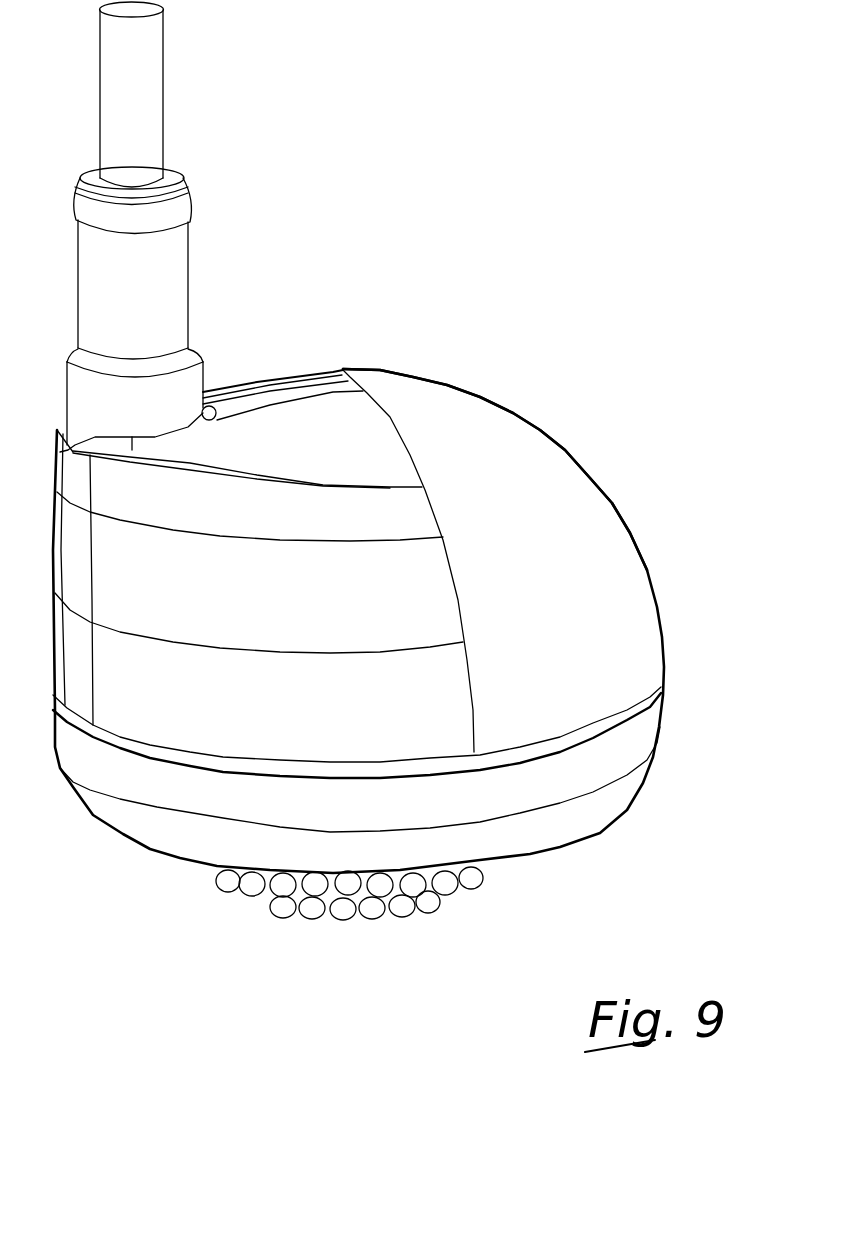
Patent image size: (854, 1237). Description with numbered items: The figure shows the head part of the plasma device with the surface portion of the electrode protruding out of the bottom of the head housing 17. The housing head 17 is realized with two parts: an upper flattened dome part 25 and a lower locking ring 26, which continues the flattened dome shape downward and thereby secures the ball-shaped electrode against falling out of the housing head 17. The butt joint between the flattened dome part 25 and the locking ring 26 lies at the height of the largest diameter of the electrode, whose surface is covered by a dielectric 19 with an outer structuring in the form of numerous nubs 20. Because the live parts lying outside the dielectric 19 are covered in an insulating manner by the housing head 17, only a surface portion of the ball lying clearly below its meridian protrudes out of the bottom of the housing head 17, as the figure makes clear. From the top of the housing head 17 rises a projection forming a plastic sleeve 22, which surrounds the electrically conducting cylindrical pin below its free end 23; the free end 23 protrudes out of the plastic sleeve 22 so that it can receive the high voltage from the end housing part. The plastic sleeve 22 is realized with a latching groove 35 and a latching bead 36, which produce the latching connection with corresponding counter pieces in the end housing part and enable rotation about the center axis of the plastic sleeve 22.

The head housing 17 is at (400, 686).
The dielectric 19 is at (413, 883).
The nubs 20 is at (465, 880).
The plastic sleeve 22 is at (207, 223).
The free end 23 is at (148, 65).
The flattened dome part 25 is at (442, 392).
The locking ring 26 is at (638, 743).
The latching groove 35 is at (192, 262).
The latching bead 36 is at (190, 200).